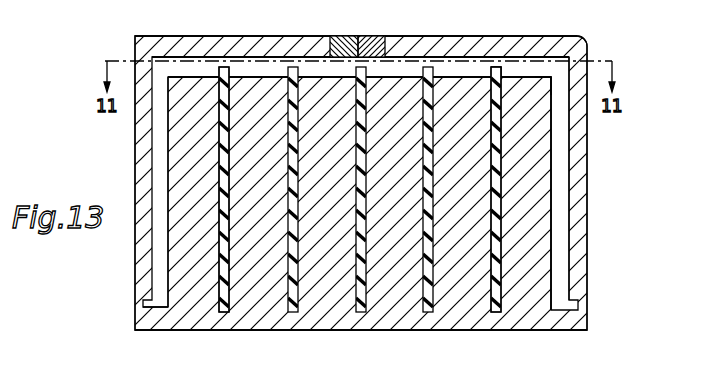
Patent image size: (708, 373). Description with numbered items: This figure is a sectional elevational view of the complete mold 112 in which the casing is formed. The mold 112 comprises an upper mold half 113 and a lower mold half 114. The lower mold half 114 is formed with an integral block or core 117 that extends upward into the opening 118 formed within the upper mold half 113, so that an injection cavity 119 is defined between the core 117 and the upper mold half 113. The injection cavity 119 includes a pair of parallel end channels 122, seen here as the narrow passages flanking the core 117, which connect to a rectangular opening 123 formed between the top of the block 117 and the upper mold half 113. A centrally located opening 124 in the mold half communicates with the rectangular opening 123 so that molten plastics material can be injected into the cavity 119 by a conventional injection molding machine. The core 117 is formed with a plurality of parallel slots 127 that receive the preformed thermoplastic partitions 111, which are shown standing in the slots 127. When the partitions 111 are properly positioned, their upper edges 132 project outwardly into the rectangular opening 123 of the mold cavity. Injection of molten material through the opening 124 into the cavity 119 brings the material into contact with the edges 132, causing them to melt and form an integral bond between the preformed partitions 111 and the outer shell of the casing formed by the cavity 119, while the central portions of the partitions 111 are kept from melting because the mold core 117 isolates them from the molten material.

The preformed thermoplastic partitions 111 is at (226, 313).
The mold 112 is at (134, 319).
The upper mold half 113 is at (187, 45).
The lower mold half 114 is at (177, 318).
The block or core 117 is at (543, 263).
The opening 118 is at (518, 57).
The injection cavity 119 is at (554, 73).
The end channels 122 is at (560, 184).
The rectangular opening 123 is at (247, 66).
The opening 124 is at (372, 18).
The parallel slots 127 is at (228, 158).
The upper edges 132 is at (490, 64).